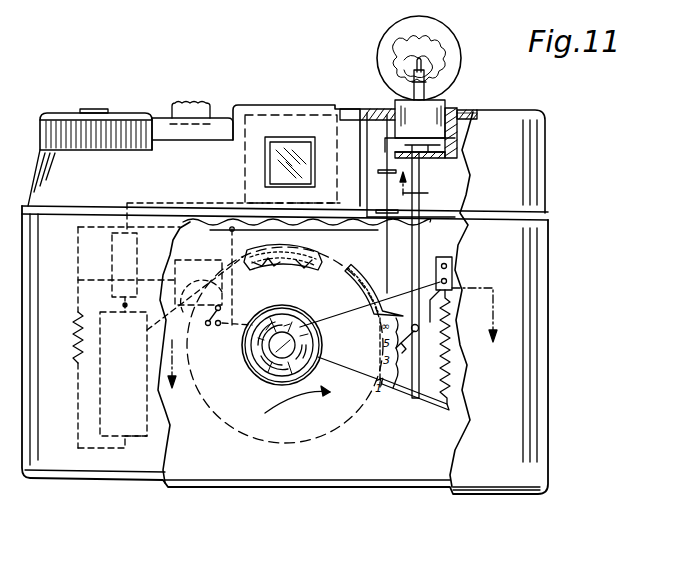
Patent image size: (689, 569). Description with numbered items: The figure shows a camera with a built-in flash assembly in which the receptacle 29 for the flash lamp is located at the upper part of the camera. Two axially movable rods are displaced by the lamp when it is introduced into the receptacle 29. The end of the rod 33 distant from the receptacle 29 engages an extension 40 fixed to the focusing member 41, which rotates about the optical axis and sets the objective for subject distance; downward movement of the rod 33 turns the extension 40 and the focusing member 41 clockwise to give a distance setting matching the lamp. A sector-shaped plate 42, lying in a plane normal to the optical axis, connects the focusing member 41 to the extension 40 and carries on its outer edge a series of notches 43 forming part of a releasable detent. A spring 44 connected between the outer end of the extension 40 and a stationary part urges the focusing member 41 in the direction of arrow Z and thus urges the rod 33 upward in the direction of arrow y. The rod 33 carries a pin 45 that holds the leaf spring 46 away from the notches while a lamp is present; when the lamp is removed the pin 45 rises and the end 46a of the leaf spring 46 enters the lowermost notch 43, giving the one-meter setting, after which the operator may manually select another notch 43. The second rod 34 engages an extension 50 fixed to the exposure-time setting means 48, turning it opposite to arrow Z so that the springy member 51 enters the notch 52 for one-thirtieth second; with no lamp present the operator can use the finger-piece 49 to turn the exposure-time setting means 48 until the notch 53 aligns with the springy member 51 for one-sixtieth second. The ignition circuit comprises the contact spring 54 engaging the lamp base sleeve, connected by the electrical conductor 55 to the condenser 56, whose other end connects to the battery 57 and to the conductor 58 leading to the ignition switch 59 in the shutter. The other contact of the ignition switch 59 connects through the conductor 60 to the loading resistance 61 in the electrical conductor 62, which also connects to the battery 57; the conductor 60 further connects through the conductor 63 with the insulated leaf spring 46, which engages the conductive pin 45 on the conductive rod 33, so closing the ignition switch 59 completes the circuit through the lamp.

The receptacle 29 is at (456, 142).
The elongated rod 33 is at (421, 176).
The elongated rod 34 is at (385, 183).
The extension 40 is at (403, 397).
The focusing member 41 is at (263, 374).
The plate 42 is at (347, 331).
The notches 43 is at (311, 403).
The spring 44 is at (407, 341).
The pin 45 is at (420, 329).
The leaf spring 46 is at (452, 297).
The end of the leaf spring 46a is at (452, 374).
The exposure-time setting means 48 is at (263, 442).
The finger-piece 49 is at (123, 366).
The extension 50 is at (395, 305).
The springy member 51 is at (283, 268).
The notch 52 is at (265, 268).
The notch 53 is at (304, 268).
The contact spring 54 is at (392, 116).
The electrical conductor 55 is at (207, 203).
The condenser 56 is at (113, 243).
The battery 57 is at (136, 432).
The conductor 58 is at (78, 280).
The ignition switch 59 is at (198, 343).
The conductor 60 is at (232, 245).
The loading resistance 61 is at (75, 318).
The electrical conductor 62 is at (77, 382).
The conductor 63 is at (356, 266).